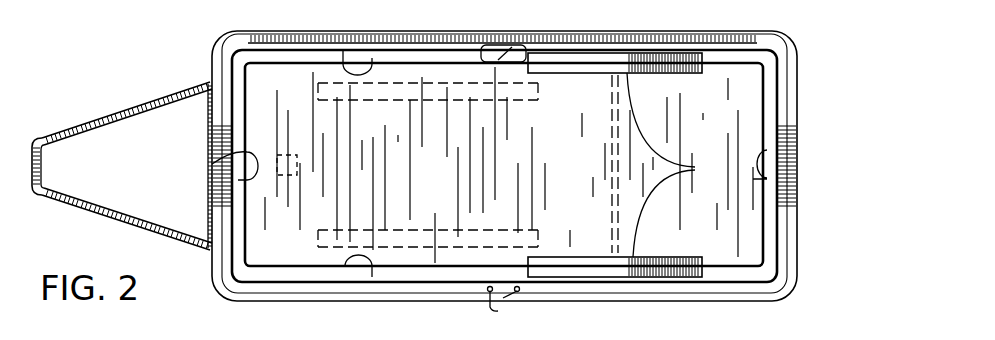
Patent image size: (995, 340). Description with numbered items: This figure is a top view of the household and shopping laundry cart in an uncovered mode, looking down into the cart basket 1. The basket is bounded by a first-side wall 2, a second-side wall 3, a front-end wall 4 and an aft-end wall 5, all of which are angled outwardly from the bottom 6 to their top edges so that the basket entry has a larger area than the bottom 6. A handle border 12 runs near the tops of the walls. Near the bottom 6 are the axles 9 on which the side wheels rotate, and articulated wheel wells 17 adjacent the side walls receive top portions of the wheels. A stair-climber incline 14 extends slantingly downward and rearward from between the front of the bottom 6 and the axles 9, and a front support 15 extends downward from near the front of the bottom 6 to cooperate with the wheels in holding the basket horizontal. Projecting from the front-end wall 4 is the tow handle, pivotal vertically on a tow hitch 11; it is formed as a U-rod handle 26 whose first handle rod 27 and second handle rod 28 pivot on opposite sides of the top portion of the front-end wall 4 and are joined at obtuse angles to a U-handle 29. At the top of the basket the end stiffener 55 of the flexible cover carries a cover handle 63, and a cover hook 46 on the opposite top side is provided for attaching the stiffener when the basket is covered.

The cart basket 1 is at (818, 127).
The first-side wall 2 is at (345, 266).
The second-side wall 3 is at (343, 50).
The front-end wall 4 is at (212, 164).
The aft-end wall 5 is at (767, 150).
The bottom 6 is at (439, 179).
The axles 9 is at (612, 160).
The tow hitch 11 is at (210, 142).
The handle border 12 is at (423, 287).
The stair-climber incline 14 is at (433, 83).
The front support 15 is at (296, 181).
The wheel wells 17 is at (695, 168).
The U-rod handle 26 is at (122, 135).
The first handle rod 27 is at (116, 222).
The second handle rod 28 is at (116, 112).
The U-handle 29 is at (40, 165).
The cover hook 46 is at (502, 314).
The end stiffener 55 is at (569, 40).
The cover handle 63 is at (506, 45).